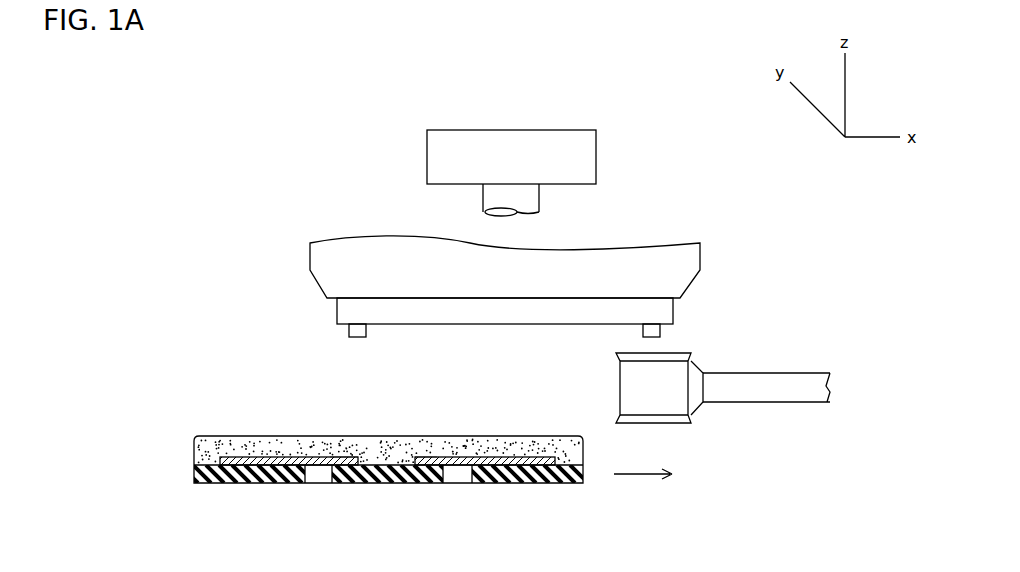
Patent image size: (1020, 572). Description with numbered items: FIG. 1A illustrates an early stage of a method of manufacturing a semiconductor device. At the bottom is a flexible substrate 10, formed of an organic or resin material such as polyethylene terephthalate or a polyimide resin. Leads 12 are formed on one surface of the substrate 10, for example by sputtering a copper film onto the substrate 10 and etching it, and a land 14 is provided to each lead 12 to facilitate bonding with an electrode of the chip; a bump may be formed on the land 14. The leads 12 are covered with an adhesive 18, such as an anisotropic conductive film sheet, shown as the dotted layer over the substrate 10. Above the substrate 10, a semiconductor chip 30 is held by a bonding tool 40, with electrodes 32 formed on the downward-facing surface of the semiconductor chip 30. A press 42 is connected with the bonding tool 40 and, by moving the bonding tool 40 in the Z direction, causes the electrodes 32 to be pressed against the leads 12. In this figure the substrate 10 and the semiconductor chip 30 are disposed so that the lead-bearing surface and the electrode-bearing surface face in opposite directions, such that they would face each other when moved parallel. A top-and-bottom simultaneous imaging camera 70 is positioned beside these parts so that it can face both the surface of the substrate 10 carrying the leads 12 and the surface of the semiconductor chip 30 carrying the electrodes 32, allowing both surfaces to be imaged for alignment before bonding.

The substrate 10 is at (370, 483).
The leads 12 is at (330, 457).
The land 14 is at (243, 458).
The adhesive 18 is at (212, 452).
The semiconductor chip 30 is at (465, 307).
The electrodes 32 is at (362, 330).
The bonding tool 40 is at (657, 270).
The press 42 is at (567, 160).
The top-and-bottom simultaneous imaging camera 70 is at (733, 415).